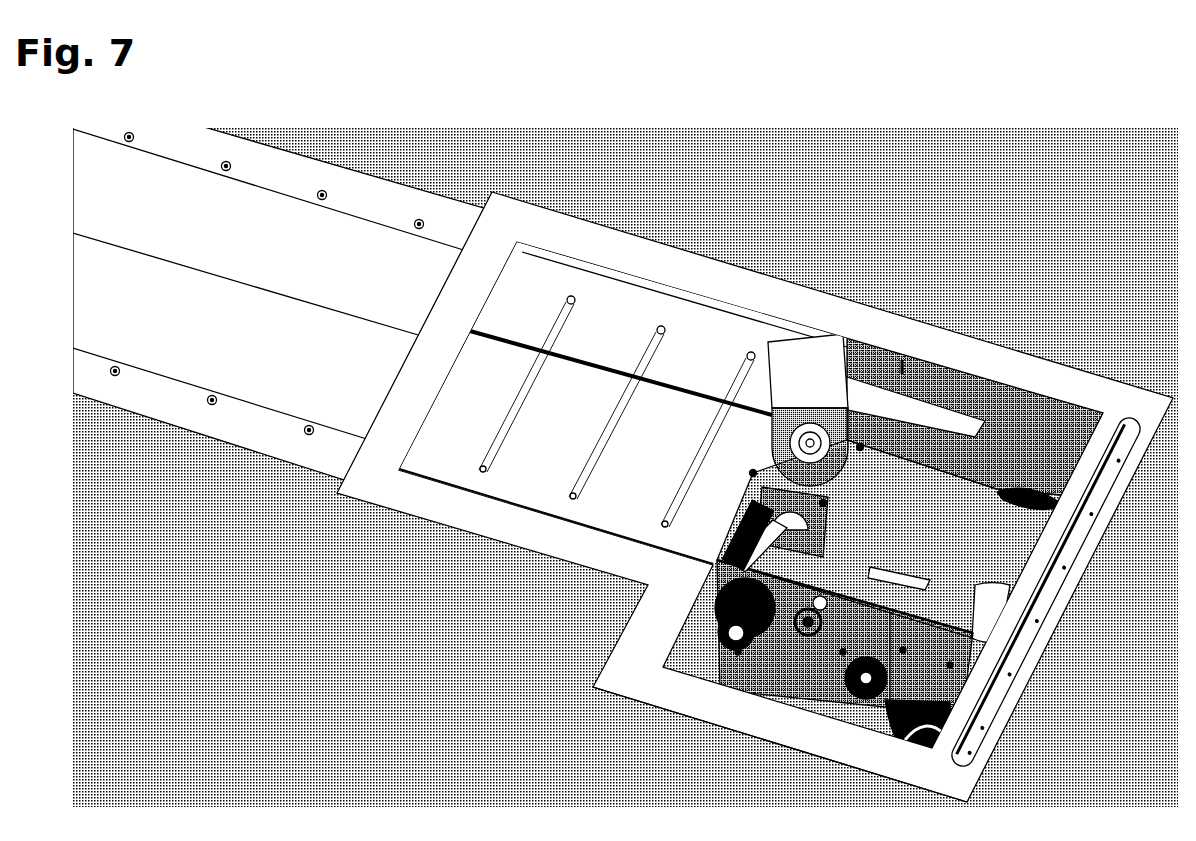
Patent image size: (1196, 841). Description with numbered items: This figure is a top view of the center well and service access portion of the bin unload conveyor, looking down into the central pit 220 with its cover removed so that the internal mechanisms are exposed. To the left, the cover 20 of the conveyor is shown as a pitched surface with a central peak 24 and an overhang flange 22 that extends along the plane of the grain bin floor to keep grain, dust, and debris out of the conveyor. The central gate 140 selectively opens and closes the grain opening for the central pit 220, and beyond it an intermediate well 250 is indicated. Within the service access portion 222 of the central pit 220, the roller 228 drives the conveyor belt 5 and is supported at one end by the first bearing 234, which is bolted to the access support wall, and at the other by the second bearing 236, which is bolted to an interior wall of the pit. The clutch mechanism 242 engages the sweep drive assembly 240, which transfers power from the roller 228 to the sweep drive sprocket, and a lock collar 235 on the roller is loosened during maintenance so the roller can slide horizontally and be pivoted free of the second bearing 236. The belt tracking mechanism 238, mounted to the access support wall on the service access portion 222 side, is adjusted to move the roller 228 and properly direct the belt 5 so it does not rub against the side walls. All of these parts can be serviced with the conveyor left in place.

The cover 20 is at (224, 351).
The overhang flange 22 is at (397, 183).
The central peak 24 is at (322, 307).
The central pit 220 is at (720, 248).
The service access portion 222 is at (745, 714).
The central gate 140 is at (548, 422).
The conveyor belt 5 is at (901, 538).
The first bearing 234 is at (932, 713).
The intermediate well 250 is at (973, 433).
The sweep drive assembly 240 is at (756, 490).
The clutch mechanism 242 is at (864, 655).
The belt tracking mechanism 238 is at (843, 652).
The lock collar 235 is at (902, 740).
The second bearing 236 is at (1032, 490).
The roller 228 is at (1040, 508).